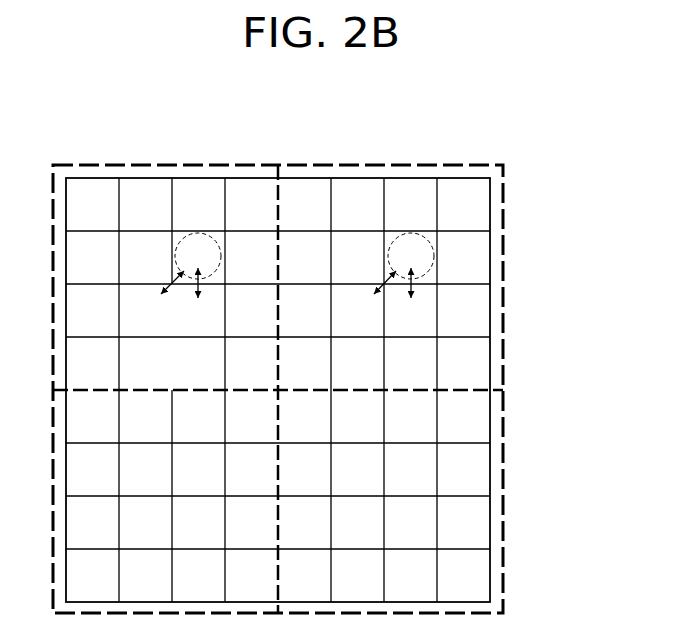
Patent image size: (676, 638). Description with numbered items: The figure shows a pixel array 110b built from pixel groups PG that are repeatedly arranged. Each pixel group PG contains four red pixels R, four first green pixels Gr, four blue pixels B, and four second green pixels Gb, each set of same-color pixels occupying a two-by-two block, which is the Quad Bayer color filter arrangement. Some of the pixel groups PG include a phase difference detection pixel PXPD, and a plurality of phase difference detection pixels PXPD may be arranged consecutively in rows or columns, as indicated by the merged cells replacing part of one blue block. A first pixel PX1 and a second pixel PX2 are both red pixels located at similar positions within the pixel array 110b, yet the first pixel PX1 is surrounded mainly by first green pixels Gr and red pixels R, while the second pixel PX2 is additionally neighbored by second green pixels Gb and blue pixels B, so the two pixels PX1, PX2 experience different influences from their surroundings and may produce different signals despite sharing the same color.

The pixel array 110b is at (340, 346).
The pixel group PG is at (503, 363).
The first pixel PX1 is at (211, 236).
The second pixel PX2 is at (425, 236).
The phase difference detection pixel PXPD is at (172, 337).